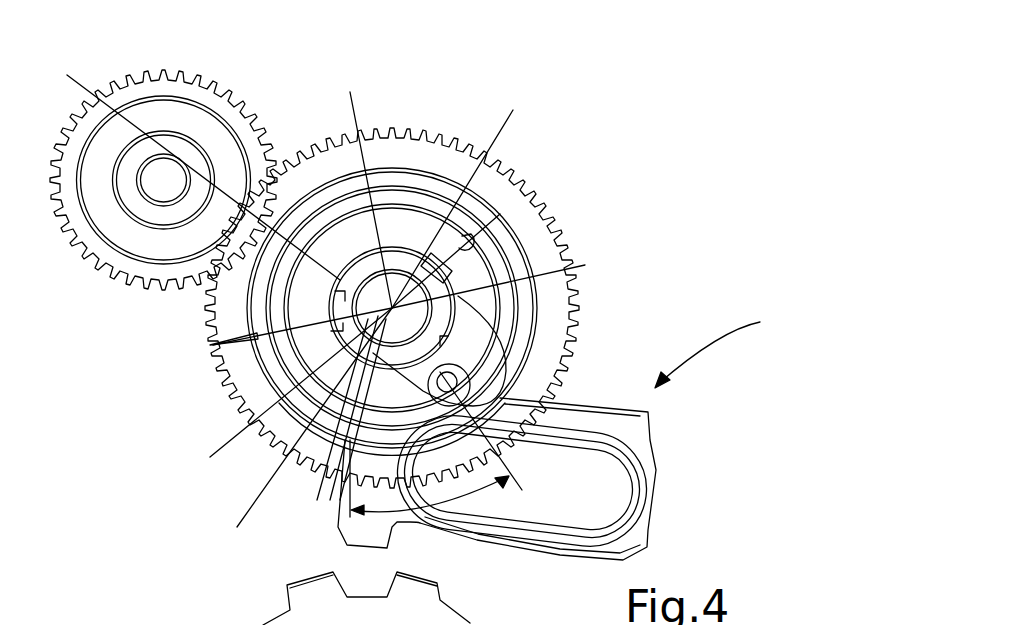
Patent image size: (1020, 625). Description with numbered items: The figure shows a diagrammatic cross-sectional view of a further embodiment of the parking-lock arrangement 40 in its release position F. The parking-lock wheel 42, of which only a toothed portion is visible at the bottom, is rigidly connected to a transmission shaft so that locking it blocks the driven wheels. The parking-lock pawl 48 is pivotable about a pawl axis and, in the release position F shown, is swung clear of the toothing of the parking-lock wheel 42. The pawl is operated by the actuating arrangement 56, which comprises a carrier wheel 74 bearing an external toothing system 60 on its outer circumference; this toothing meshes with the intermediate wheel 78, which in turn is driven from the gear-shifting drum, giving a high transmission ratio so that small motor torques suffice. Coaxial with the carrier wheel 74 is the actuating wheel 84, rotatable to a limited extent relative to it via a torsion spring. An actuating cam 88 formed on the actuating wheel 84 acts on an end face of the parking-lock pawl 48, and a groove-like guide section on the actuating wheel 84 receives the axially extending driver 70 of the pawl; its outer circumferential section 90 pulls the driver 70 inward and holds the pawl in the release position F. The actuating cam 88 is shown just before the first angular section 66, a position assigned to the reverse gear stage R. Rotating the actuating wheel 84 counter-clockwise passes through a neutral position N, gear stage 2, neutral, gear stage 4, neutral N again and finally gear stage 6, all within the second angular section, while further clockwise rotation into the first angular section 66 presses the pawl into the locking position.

The intermediate wheel 78 is at (232, 80).
The carrier wheel 74 is at (402, 125).
The external toothing system 60 is at (316, 146).
The actuating wheel 84 is at (433, 168).
The parking-lock arrangement 40 is at (633, 90).
The gear stage 6 is at (453, 283).
The actuating arrangement 56 is at (551, 174).
The gear stage 4 is at (367, 187).
The outer circumferential section 90 is at (480, 240).
The gear stage 2 is at (212, 345).
The neutral position N is at (285, 292).
The actuating cam 88 is at (362, 426).
The driver 70 is at (458, 372).
The parking-lock pawl 48 is at (638, 430).
The release position F is at (718, 345).
The reverse gear stage R is at (406, 503).
The first angular section 66 is at (420, 524).
The parking-lock wheel 42 is at (413, 610).